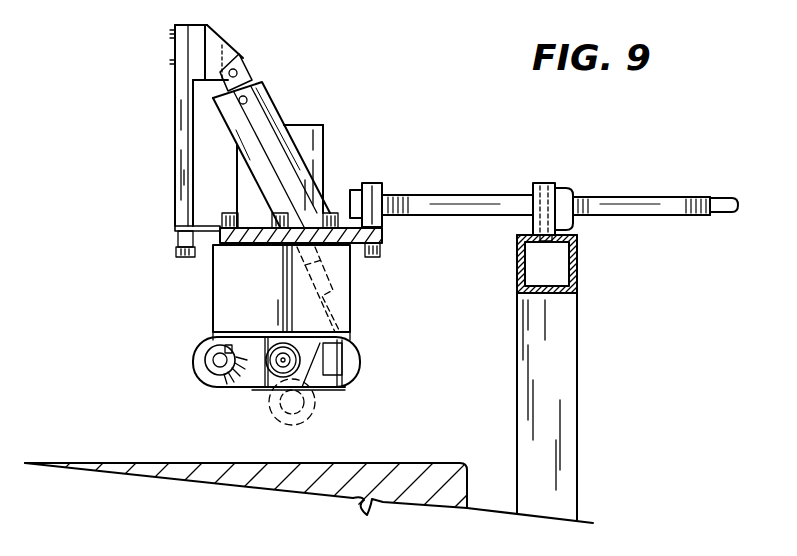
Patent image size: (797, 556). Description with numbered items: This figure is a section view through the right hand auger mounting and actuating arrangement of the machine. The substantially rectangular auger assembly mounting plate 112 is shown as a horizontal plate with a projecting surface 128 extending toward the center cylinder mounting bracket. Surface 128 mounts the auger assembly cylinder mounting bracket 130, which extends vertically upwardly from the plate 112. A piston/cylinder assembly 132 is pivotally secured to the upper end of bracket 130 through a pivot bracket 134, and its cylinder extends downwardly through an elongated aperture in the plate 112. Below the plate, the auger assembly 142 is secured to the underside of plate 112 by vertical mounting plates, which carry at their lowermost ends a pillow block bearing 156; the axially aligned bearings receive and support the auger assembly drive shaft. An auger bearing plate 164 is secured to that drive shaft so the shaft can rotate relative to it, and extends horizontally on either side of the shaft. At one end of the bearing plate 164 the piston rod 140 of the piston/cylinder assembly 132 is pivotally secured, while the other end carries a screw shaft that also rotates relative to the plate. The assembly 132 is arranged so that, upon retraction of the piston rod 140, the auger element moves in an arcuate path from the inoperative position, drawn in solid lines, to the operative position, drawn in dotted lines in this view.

The auger assembly mounting plate 112 is at (206, 236).
The projecting surface 128 is at (177, 236).
The auger assembly cylinder mounting bracket 130 is at (185, 88).
The piston/cylinder assembly 132 is at (281, 103).
The pivot bracket 134 is at (223, 58).
The piston rod 140 is at (330, 283).
The auger assembly 142 is at (317, 390).
The pillow block bearing 156 is at (242, 308).
The auger bearing plate 164 is at (358, 387).